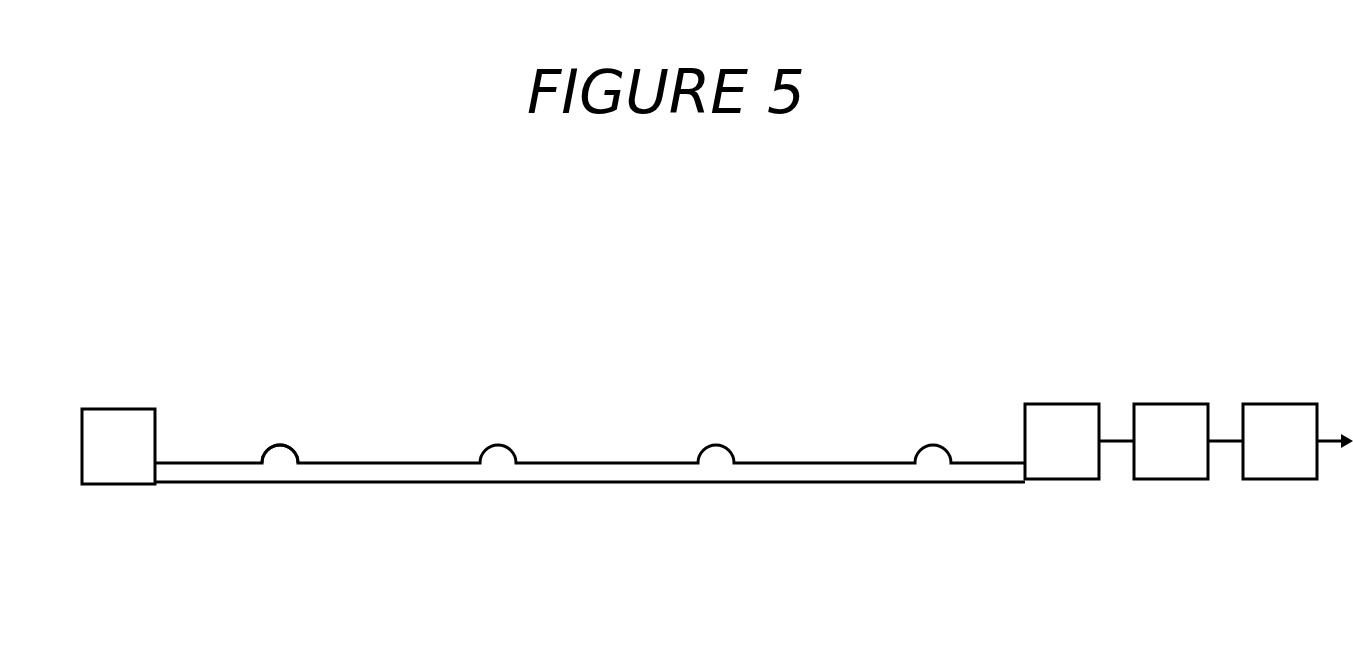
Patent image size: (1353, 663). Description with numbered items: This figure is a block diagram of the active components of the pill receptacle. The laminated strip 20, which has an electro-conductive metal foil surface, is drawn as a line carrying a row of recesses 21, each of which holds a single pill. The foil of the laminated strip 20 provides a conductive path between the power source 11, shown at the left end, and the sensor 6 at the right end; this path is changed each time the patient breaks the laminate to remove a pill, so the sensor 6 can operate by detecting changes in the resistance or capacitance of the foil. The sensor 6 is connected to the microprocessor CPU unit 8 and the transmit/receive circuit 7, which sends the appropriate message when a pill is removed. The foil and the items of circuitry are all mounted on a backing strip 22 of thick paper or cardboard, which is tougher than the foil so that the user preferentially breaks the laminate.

The sensor 6 is at (1060, 481).
The transmit/receive circuit 7 is at (1278, 481).
The microprocessor CPU unit 8 is at (1170, 481).
The power source 11 is at (113, 485).
The laminated strip 20 is at (430, 463).
The recesses 21 is at (280, 445).
The backing strip 22 is at (607, 486).